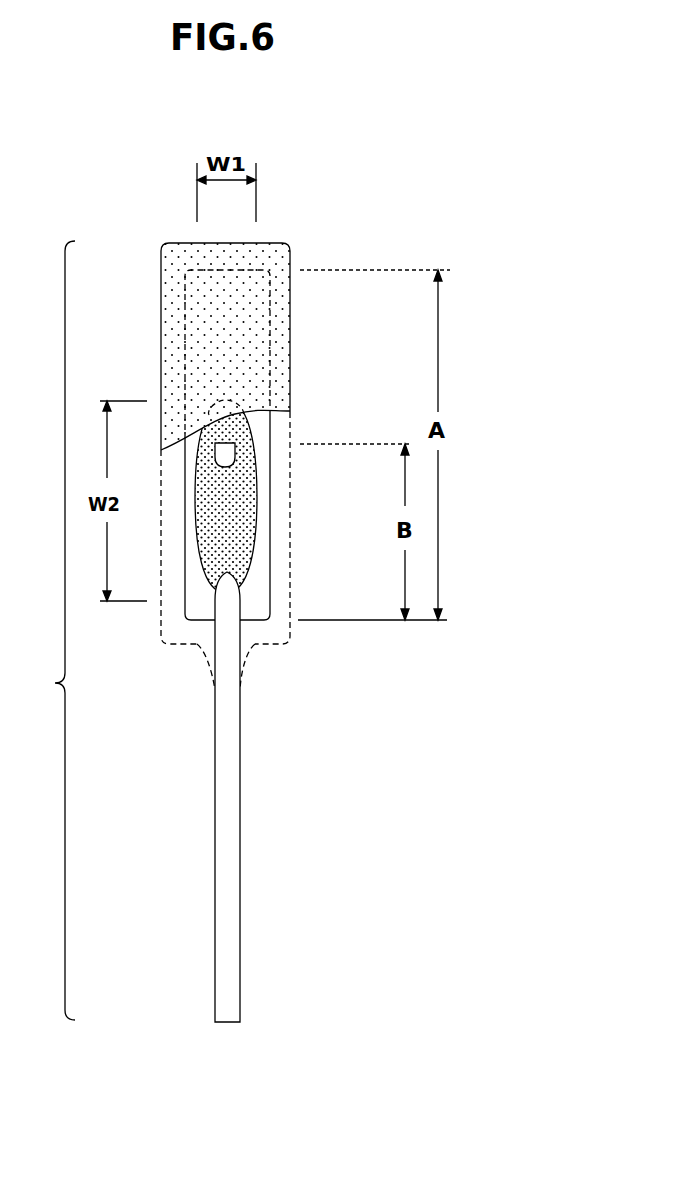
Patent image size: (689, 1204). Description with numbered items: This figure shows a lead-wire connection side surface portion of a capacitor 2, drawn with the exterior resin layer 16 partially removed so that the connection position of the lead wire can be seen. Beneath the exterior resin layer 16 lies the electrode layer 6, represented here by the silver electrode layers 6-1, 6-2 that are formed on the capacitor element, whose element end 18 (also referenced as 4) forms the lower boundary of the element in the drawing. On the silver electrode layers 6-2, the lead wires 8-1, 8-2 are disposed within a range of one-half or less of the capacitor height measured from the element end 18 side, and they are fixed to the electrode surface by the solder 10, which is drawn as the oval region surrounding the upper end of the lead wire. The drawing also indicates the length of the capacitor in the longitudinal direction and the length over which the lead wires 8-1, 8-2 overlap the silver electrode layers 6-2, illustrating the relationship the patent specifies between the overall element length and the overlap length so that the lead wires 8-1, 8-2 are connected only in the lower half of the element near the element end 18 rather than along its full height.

The capacitor 2 is at (55, 630).
The exterior resin layer 16 is at (267, 243).
The electrode layer 6 is at (295, 355).
The silver electrode layer 6-1 is at (295, 355).
The silver electrode layer 6-2 is at (260, 438).
The element end 18 is at (270, 561).
The base body 4 is at (255, 622).
The solder 10 is at (257, 528).
The lead wire 8-1 is at (295, 797).
The lead wire 8-2 is at (240, 848).